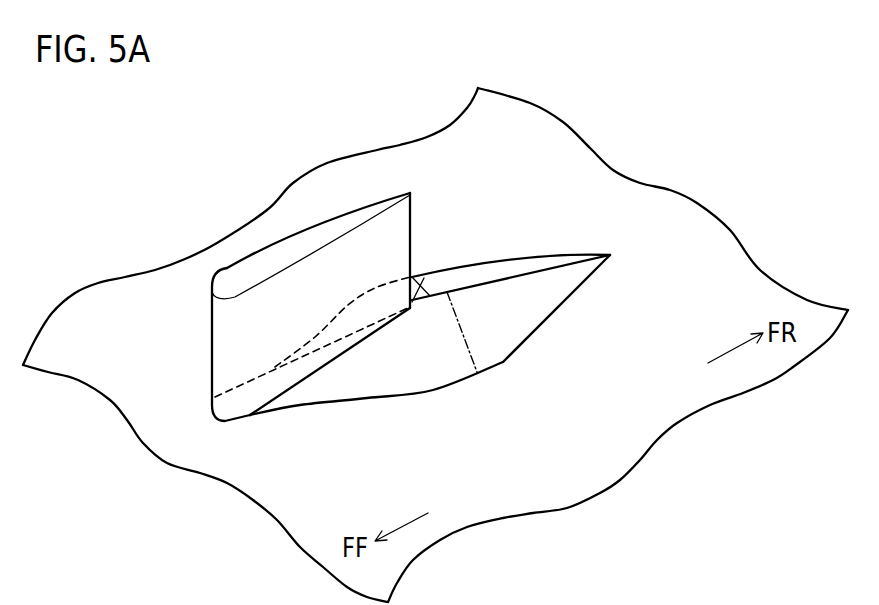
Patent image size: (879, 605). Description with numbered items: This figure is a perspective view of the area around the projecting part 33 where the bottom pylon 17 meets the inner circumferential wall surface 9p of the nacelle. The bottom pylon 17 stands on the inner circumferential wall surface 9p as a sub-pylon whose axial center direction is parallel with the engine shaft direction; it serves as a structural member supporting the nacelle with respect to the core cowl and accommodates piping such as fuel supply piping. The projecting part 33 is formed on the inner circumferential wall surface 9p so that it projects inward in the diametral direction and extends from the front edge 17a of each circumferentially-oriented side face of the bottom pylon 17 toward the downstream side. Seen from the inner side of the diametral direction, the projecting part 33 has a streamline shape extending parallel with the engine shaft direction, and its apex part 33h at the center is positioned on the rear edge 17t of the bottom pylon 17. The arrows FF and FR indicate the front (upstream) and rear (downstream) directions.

The inner circumferential wall surface 9p is at (498, 97).
The bottom pylon 17 is at (261, 255).
The front edge 17a is at (213, 333).
The rear edge 17t is at (412, 210).
The projecting part 33 is at (545, 312).
The apex part 33h is at (422, 275).